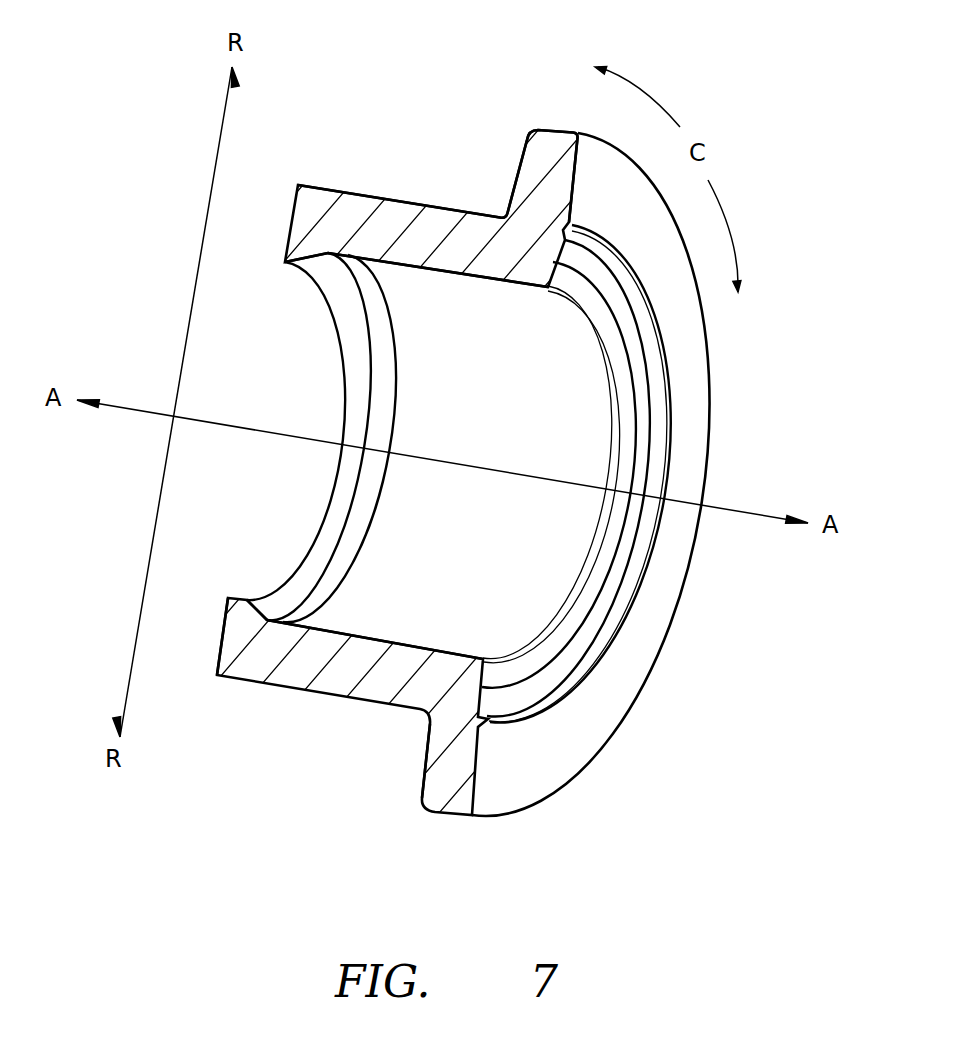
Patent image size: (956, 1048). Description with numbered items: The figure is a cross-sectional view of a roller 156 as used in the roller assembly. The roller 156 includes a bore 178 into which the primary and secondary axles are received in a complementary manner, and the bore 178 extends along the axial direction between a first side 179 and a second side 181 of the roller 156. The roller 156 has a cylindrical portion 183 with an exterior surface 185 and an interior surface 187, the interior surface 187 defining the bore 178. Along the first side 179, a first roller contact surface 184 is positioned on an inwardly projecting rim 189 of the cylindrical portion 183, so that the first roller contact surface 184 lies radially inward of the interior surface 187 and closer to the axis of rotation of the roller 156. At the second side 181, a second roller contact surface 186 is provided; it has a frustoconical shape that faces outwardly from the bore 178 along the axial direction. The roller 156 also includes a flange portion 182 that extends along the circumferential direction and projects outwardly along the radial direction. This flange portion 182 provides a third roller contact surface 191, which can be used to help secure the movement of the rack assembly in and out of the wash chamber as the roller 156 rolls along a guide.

The roller 156 is at (659, 474).
The bore 178 is at (298, 368).
The first side 179 is at (205, 678).
The second side 181 is at (430, 820).
The flange portion 182 is at (543, 183).
The cylindrical portion 183 is at (357, 210).
The first roller contact surface 184 is at (292, 573).
The exterior surface 185 is at (447, 208).
The second roller contact surface 186 is at (562, 316).
The interior surface 187 is at (423, 277).
The inwardly projecting rim 189 is at (268, 258).
The third roller contact surface 191 is at (423, 760).